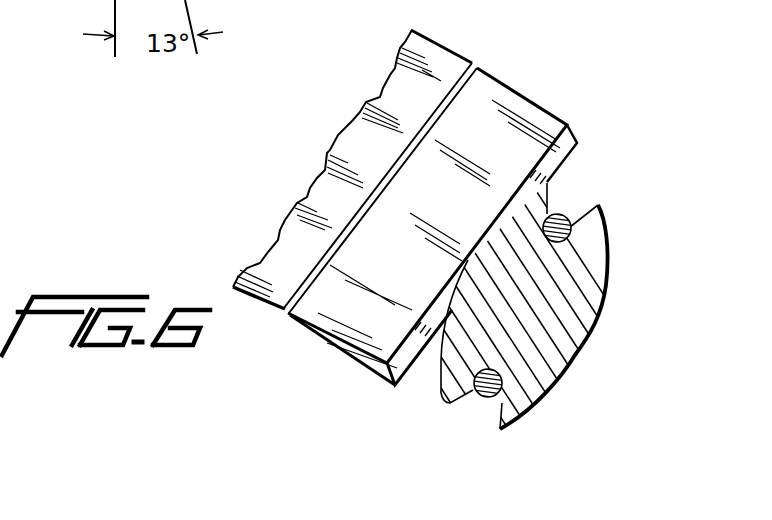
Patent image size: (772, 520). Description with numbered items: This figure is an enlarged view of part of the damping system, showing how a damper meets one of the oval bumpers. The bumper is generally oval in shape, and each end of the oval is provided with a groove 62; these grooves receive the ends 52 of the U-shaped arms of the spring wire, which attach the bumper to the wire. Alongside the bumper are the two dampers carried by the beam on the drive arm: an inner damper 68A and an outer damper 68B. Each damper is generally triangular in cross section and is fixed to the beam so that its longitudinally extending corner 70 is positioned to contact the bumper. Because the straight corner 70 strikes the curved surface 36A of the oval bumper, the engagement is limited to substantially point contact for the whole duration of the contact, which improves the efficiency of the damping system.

The inner damper 68A is at (358, 306).
The outer damper 68B is at (399, 96).
The longitudinally extending corner 70 is at (518, 117).
The groove 62 is at (597, 207).
The end of the U-shaped arms 52 is at (563, 214).
The curved bearing surface 36A is at (598, 318).